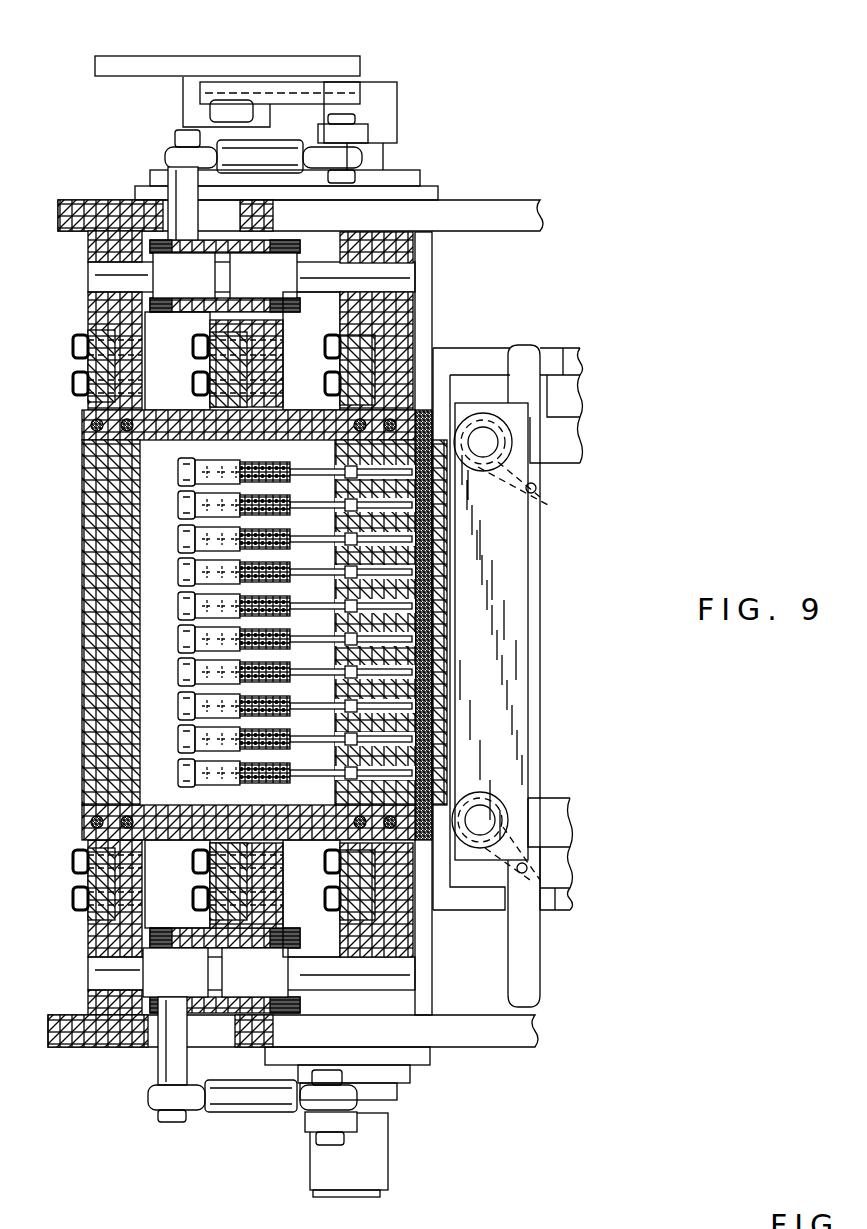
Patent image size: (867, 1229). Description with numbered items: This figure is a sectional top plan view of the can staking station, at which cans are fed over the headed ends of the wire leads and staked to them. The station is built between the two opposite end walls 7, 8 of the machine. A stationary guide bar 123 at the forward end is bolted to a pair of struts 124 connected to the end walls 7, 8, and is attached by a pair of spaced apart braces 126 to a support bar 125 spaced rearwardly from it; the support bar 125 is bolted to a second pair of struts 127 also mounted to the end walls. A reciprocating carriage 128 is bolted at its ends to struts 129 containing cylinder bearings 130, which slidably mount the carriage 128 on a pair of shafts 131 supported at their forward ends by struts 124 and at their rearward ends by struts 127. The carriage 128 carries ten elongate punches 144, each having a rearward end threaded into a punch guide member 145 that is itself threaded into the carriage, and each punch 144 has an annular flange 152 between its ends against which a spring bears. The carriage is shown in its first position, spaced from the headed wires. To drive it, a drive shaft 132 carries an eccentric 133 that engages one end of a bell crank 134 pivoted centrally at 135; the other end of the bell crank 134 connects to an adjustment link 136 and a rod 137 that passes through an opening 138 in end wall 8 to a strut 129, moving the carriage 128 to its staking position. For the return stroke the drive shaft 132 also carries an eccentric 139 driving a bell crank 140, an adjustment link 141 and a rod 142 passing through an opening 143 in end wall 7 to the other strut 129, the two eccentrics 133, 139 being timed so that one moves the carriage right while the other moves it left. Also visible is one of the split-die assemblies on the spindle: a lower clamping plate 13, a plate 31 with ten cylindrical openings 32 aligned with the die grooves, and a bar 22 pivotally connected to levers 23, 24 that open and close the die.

The end wall 7 is at (478, 203).
The end wall 8 is at (495, 1052).
The lower clamping plate 13 is at (500, 688).
The bar 22 is at (540, 630).
The lever 23 is at (534, 493).
The lever 24 is at (530, 878).
The plate 31 is at (450, 390).
The cylindrical opening 32 is at (443, 642).
The stationary guide bar 123 is at (340, 370).
The strut 124 is at (410, 313).
The support bar 125 is at (82, 642).
The brace 126 is at (157, 442).
The strut 127 is at (95, 304).
The reciprocating carriage 128 is at (208, 367).
The strut 129 is at (278, 338).
The cylinder bearing 130 is at (200, 288).
The shaft 131 is at (95, 270).
The drive shaft 132 is at (365, 1102).
The eccentric 133 is at (388, 1158).
The bell crank 134 is at (357, 1123).
The pivot 135 is at (328, 1146).
The adjustment link 136 is at (252, 1112).
The rod 137 is at (155, 1067).
The opening 138 is at (232, 1030).
The eccentric 139 is at (397, 98).
The bell crank 140 is at (368, 133).
The adjustment link 141 is at (277, 140).
The rod 142 is at (152, 168).
The opening 143 is at (175, 200).
The punch 144 is at (315, 607).
The punch guide member 145 is at (182, 568).
The annular flange 152 is at (286, 688).